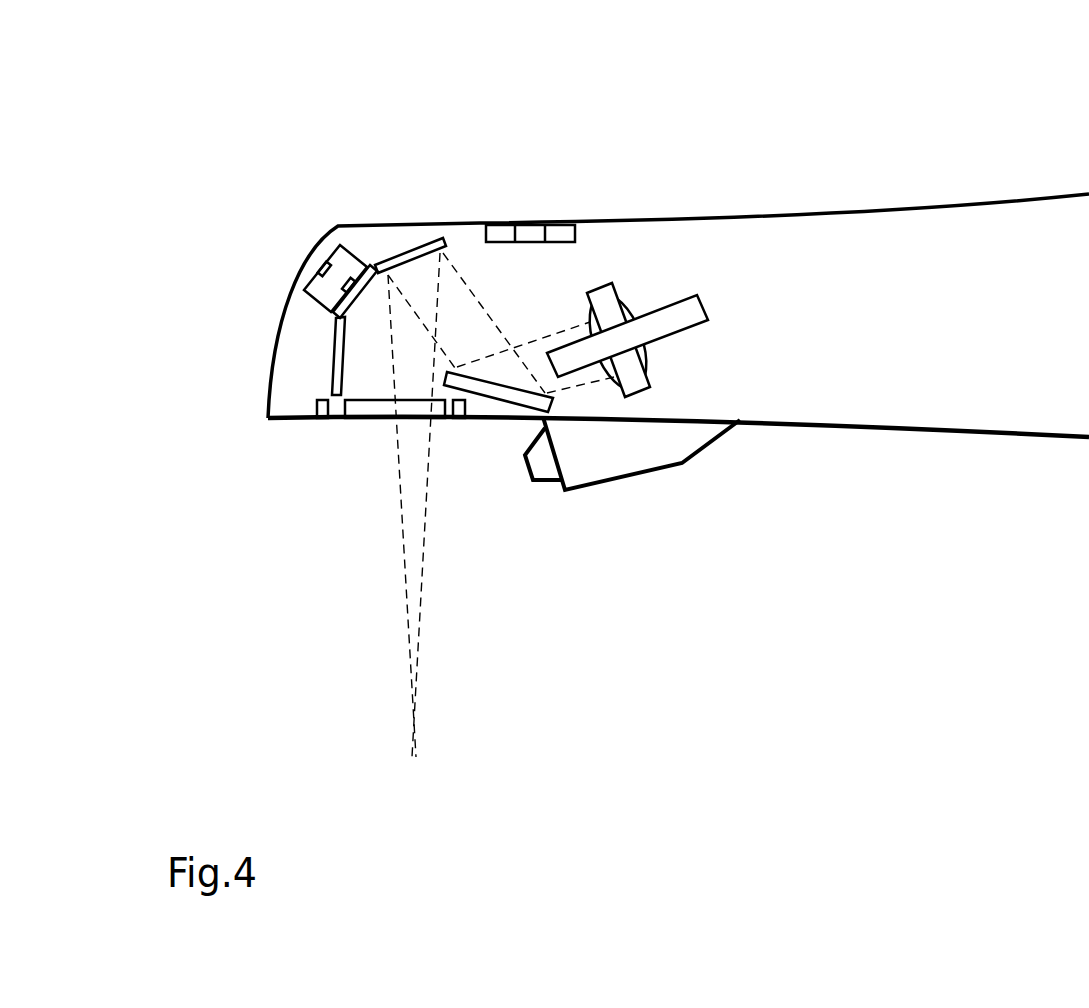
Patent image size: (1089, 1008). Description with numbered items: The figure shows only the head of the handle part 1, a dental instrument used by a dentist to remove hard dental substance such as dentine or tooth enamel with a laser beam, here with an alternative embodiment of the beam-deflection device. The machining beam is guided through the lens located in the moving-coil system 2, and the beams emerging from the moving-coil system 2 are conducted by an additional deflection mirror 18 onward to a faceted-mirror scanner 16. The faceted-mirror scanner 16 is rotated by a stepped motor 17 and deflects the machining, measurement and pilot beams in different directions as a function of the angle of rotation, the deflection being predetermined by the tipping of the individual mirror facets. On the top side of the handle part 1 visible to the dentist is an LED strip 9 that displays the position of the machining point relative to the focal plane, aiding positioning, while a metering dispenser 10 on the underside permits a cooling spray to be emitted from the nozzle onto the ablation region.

The handle part 1 is at (828, 168).
The moving-coil system 2 is at (657, 323).
The LED strip 9 is at (530, 233).
The metering dispenser 10 is at (643, 440).
The faceted-mirror scanner 16 is at (333, 357).
The stepped motor 17 is at (338, 274).
The deflection mirror 18 is at (487, 390).